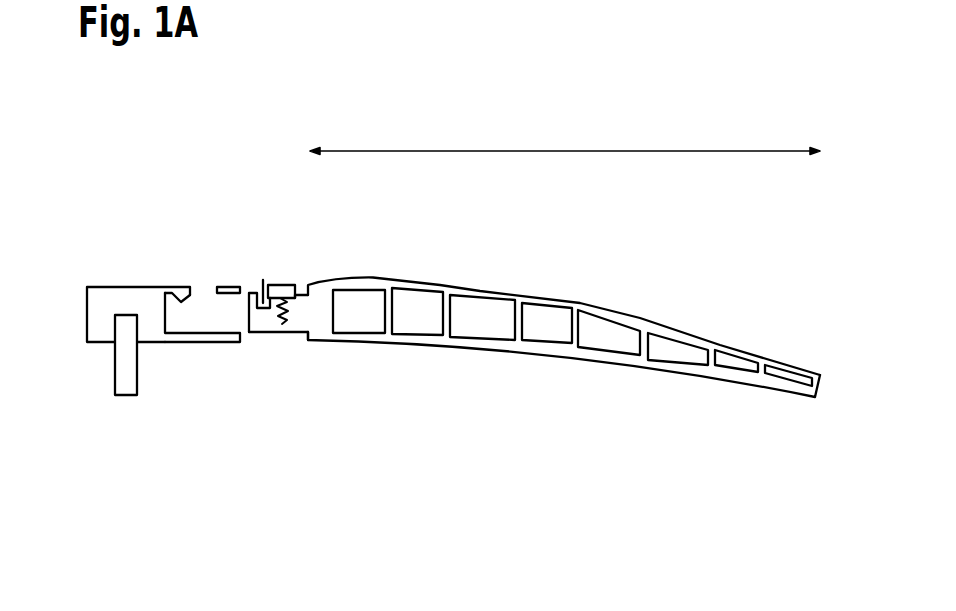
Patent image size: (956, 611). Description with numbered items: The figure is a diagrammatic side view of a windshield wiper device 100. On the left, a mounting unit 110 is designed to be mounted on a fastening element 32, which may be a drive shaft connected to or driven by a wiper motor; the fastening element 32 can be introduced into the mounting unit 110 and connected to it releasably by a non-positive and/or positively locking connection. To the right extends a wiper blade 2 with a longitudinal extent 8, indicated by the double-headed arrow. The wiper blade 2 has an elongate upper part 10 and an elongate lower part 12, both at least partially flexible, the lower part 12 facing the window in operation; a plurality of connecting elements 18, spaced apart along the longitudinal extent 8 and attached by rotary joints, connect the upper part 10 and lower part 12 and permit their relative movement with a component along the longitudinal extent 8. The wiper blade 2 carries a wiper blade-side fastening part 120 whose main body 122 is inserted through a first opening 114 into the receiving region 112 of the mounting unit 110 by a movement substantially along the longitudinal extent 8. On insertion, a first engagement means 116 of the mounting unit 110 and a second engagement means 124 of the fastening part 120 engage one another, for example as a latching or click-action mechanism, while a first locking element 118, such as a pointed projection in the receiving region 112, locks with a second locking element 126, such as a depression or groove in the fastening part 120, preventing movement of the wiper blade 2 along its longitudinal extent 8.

The wiper blade 2 is at (564, 323).
The longitudinal extent 8 is at (527, 150).
The upper part 10 is at (680, 325).
The lower part 12 is at (675, 362).
The connecting elements 18 is at (577, 330).
The fastening element 32 is at (127, 387).
The windshield wiper device 100 is at (100, 230).
The mounting unit 110 is at (180, 264).
The receiving region 112 is at (183, 315).
The first opening 114 is at (232, 320).
The first engagement means 116 is at (210, 288).
The first locking element 118 is at (182, 288).
The wiper blade-side fastening part 120 is at (269, 352).
The main body 122 is at (296, 328).
The second engagement means 124 is at (282, 285).
The second locking element 126 is at (263, 282).